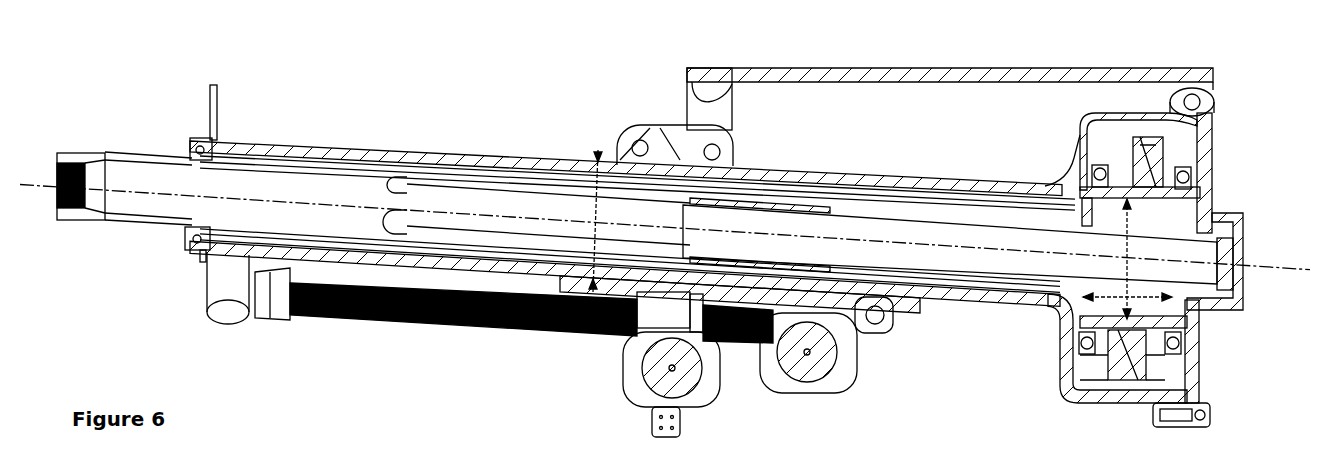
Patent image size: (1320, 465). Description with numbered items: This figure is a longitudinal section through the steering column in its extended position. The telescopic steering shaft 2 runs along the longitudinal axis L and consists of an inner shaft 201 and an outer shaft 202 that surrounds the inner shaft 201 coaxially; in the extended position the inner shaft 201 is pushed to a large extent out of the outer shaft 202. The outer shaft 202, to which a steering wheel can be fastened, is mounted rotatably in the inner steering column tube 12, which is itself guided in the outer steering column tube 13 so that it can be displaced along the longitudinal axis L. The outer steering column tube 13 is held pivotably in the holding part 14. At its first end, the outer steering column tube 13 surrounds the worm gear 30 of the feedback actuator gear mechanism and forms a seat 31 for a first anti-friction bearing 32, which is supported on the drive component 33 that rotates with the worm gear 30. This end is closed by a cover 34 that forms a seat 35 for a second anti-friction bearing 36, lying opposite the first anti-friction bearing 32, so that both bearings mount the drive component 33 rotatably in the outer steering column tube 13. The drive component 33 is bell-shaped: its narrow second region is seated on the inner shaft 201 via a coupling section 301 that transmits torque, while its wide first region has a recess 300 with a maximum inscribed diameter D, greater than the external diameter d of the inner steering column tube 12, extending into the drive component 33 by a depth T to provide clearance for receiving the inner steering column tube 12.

The steering shaft 2 is at (147, 155).
The outer shaft 202 is at (313, 150).
The inner shaft 201 is at (920, 200).
The inner steering column tube 12 is at (500, 162).
The longitudinal axis L is at (373, 200).
The external diameter of the inner steering column tube d is at (596, 148).
The holding part 14 is at (890, 70).
The outer steering column tube 13 is at (873, 182).
The first anti-friction bearing 32 is at (1095, 170).
The seat 31 is at (1110, 160).
The worm gear 30 is at (1150, 150).
The seat 35 is at (1183, 165).
The cover 34 is at (1212, 148).
The second anti-friction bearing 36 is at (1195, 180).
The drive component 33 is at (1153, 206).
The maximum inscribed diameter D is at (1078, 196).
The recess 300 is at (1222, 214).
The coupling section 301 is at (1243, 300).
The depth T is at (1200, 325).